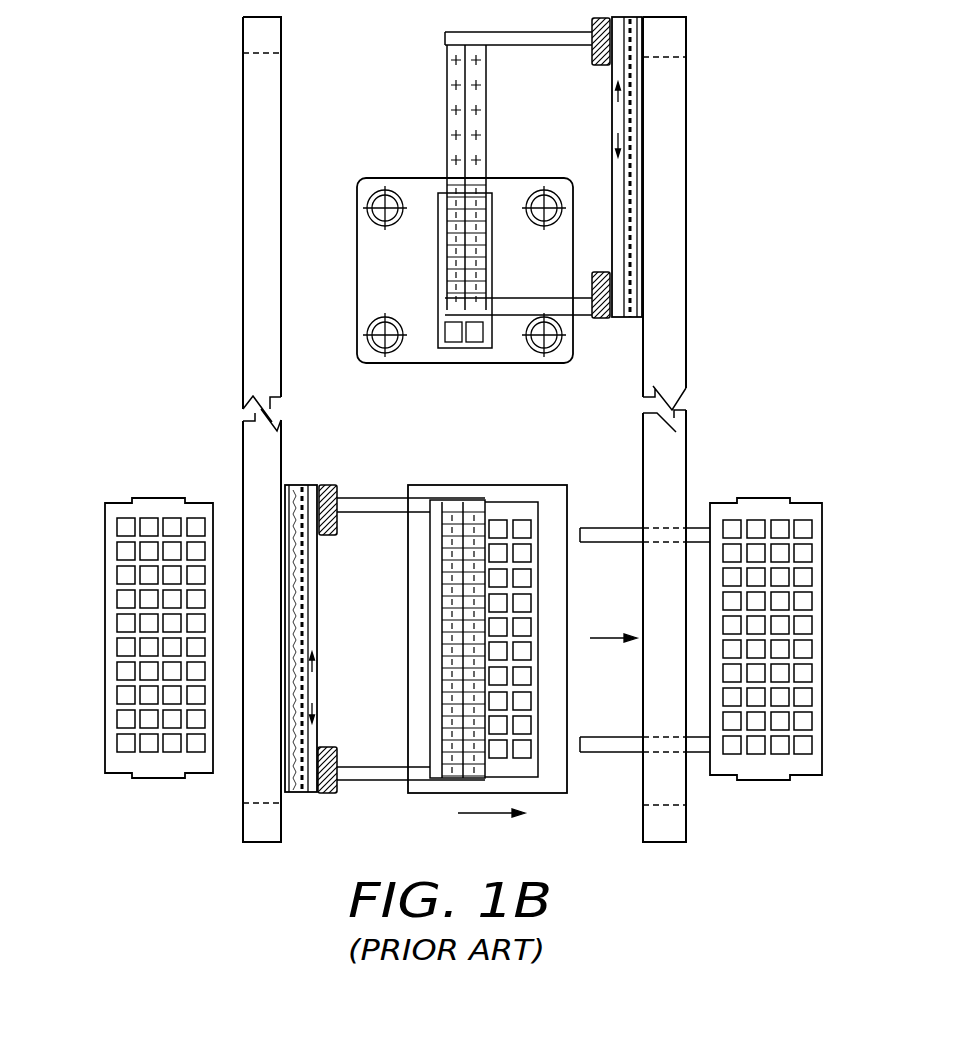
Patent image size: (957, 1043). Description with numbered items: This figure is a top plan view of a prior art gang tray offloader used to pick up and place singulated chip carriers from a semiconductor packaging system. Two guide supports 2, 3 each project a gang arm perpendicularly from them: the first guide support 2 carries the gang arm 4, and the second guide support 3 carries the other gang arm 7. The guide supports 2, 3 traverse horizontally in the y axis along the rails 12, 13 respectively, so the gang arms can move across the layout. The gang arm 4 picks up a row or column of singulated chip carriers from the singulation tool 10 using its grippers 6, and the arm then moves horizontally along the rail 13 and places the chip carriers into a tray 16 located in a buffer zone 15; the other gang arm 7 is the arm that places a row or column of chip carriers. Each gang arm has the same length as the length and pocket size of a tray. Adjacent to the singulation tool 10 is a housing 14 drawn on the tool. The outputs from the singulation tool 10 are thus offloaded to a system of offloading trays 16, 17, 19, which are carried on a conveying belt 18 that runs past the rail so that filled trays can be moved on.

The guide support 2 is at (303, 485).
The guide support 3 is at (612, 320).
The gang arm 4 is at (548, 45).
The grippers 6 is at (487, 146).
The gang arm 7 is at (380, 783).
The singulation tool 10 is at (416, 364).
The rail 12 is at (243, 296).
The rail 13 is at (686, 244).
The chain housing 14 is at (480, 345).
The buffer zone 15 is at (493, 460).
The tray 16 is at (508, 500).
The offloading tray 17 is at (165, 498).
The conveying belt 18 is at (618, 528).
The offloading tray 19 is at (778, 498).